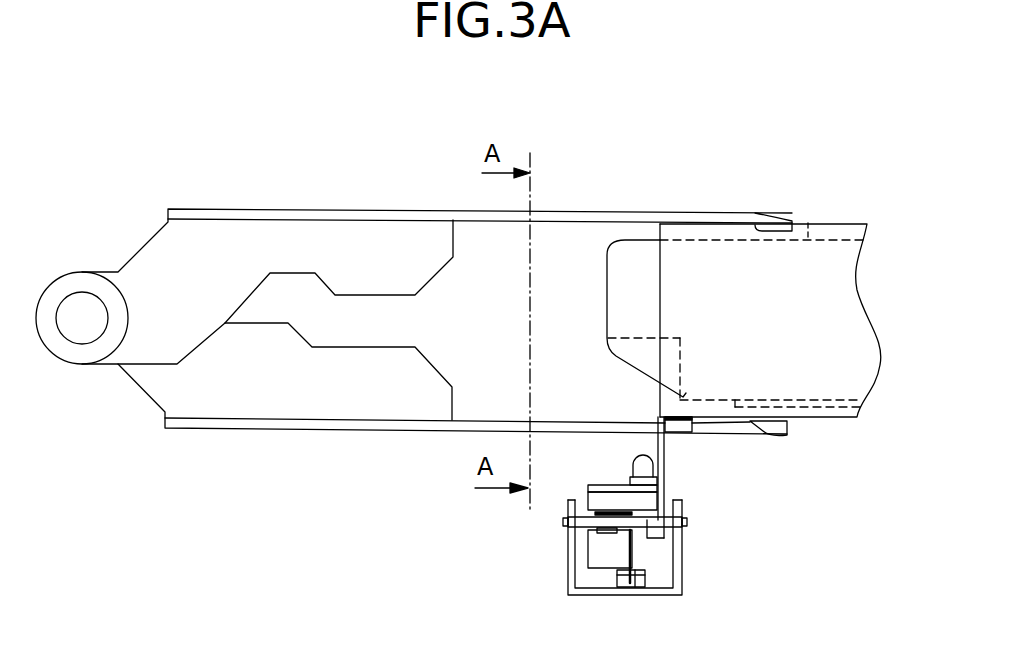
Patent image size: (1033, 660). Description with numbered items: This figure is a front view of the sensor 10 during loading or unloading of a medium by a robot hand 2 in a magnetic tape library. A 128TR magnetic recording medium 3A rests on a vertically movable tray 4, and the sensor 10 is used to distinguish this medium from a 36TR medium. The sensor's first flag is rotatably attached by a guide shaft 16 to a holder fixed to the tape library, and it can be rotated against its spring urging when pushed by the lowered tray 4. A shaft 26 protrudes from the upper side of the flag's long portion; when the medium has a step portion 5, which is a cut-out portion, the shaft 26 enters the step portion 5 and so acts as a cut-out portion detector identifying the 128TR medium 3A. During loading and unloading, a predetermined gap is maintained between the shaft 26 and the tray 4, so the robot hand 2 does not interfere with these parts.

The robot hand 2 is at (252, 430).
The tray 4 is at (833, 224).
The 128TR magnetic recording medium 3A is at (808, 223).
The step portion 5 is at (632, 358).
The shaft 26 is at (635, 453).
The guide shaft 16 is at (565, 525).
The sensor 10 is at (712, 568).